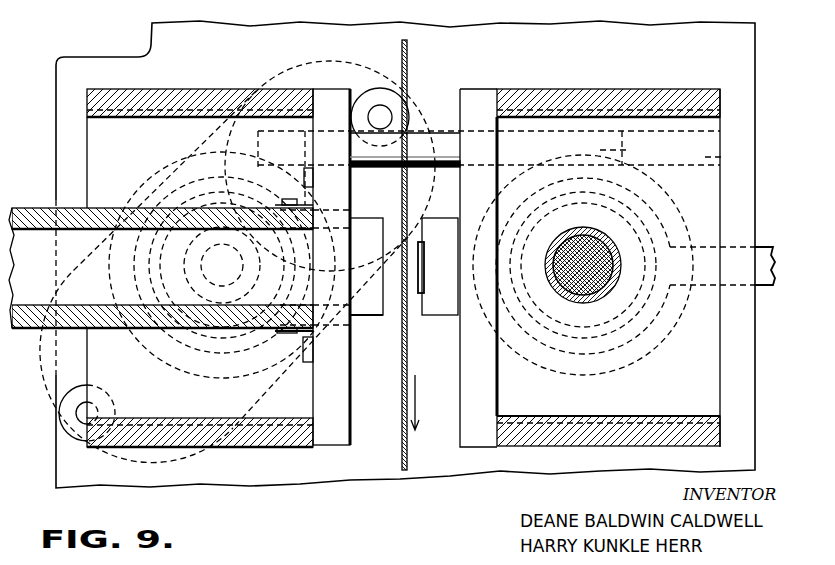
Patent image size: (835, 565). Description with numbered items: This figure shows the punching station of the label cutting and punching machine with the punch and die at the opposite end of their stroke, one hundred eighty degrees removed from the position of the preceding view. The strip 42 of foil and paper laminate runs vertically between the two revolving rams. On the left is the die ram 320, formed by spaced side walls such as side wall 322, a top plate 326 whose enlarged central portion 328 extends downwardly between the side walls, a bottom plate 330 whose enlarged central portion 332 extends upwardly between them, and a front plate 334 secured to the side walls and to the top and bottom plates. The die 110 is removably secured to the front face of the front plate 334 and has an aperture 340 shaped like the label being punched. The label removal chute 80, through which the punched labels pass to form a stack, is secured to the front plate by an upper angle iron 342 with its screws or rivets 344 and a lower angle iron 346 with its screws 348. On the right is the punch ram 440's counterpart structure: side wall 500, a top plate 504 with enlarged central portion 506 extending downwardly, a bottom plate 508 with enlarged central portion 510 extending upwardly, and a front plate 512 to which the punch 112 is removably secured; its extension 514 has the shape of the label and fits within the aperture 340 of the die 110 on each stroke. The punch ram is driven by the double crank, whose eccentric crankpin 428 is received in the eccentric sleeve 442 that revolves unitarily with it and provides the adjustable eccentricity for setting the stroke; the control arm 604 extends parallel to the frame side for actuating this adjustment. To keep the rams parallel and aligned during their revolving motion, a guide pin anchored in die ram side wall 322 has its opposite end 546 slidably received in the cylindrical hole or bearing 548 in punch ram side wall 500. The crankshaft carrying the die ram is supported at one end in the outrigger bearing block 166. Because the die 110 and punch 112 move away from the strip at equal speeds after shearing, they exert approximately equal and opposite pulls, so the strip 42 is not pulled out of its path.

The strip 42 is at (407, 60).
The chute 80 is at (161, 250).
The die 110 is at (368, 312).
The punch 112 is at (435, 312).
The outrigger bearing block 166 is at (327, 75).
The die ram 320 is at (297, 457).
The side wall 322 is at (93, 163).
The top plate 326 is at (195, 96).
The enlarged central portion 328 is at (145, 117).
The bottom plate 330 is at (240, 447).
The enlarged central portion 332 is at (202, 418).
The front plate 334 is at (337, 408).
The aperture 340 is at (367, 242).
The upper angle iron 342 is at (312, 180).
The screws or rivets 344 is at (303, 178).
The lower angle iron 346 is at (312, 343).
The screws 348 is at (283, 333).
The eccentric crankpin 428 is at (608, 300).
The eccentric sleeve 442 is at (588, 242).
The side wall 500 is at (708, 342).
The top plate 504 is at (591, 90).
The enlarged central portion 506 is at (668, 118).
The bottom plate 508 is at (603, 447).
The enlarged central portion 510 is at (622, 416).
The front plate 512 is at (468, 393).
The extension 514 is at (432, 280).
The opposite end 546 is at (631, 148).
The cylindrical hole or bearing 548 is at (728, 148).
The control arm 604 is at (763, 247).